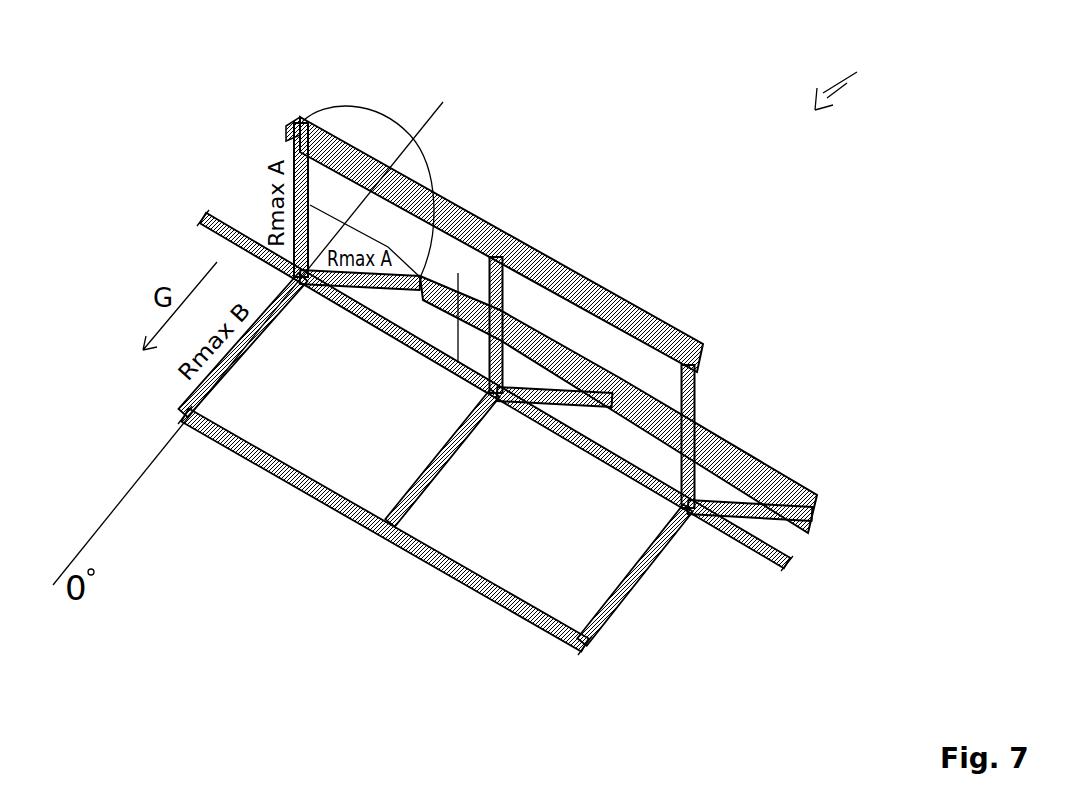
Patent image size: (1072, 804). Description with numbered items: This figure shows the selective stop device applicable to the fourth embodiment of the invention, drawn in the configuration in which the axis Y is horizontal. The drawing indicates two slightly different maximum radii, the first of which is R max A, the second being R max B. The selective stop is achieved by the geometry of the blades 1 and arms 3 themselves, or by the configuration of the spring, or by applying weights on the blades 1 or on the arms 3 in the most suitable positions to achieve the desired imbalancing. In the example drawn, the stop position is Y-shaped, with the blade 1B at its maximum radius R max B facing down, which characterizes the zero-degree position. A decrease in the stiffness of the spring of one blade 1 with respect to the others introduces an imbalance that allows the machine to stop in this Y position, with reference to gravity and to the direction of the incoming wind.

The blade 1 is at (660, 320).
The arm 3 is at (245, 360).
The blade 1B is at (333, 513).
The axis Y is at (770, 553).
The radius R max A is at (844, 79).